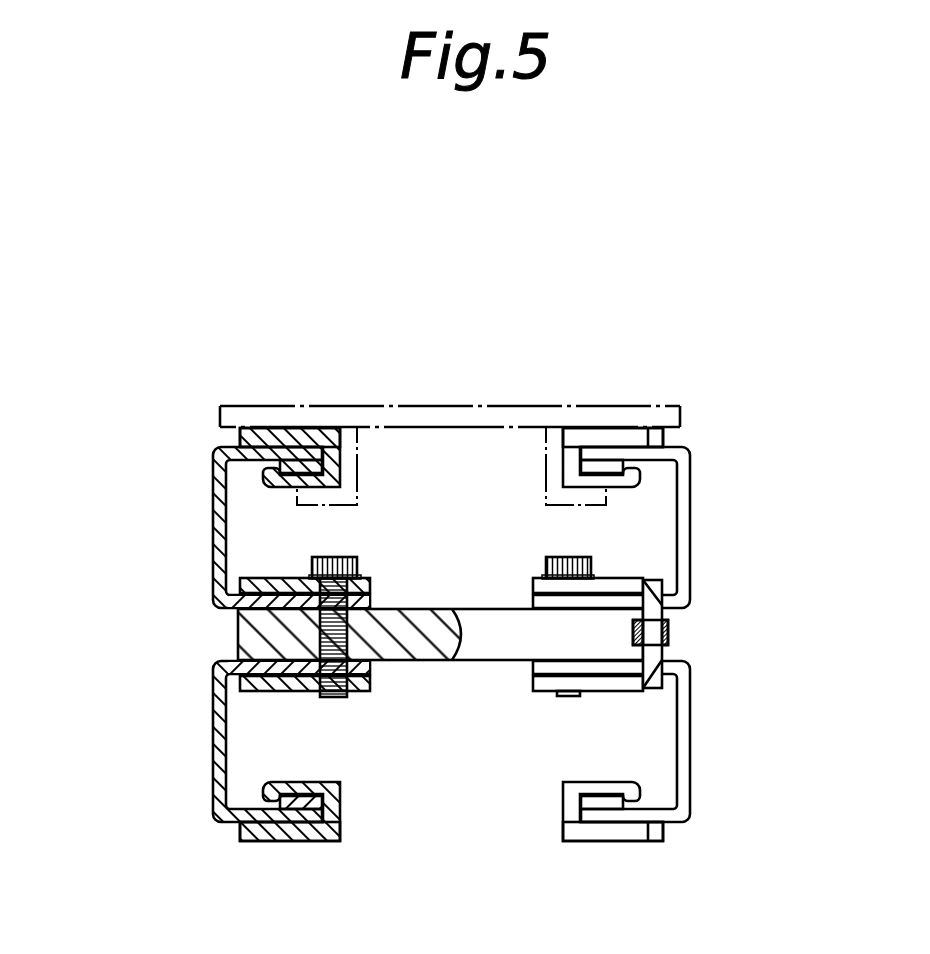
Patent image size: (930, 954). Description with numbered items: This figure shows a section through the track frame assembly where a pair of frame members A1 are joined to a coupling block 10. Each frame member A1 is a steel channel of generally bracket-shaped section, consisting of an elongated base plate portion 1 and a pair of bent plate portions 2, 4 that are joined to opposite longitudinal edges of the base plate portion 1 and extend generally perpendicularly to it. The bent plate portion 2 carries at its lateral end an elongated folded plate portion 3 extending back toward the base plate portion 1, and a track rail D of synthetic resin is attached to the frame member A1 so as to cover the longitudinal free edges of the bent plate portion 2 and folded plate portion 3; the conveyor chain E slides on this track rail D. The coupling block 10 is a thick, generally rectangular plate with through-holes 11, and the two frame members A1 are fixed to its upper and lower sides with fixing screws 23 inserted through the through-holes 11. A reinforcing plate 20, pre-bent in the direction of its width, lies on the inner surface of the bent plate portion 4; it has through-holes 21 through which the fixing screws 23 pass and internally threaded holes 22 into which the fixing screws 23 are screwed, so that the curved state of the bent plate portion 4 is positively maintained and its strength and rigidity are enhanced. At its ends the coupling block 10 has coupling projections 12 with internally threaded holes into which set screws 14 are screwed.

The base plate portion 1 is at (680, 538).
The frame member A1 is at (214, 522).
The bent plate portion 2 is at (642, 452).
The folded plate portion 3 is at (605, 462).
The bent plate portion 4 is at (525, 580).
The coupling block 10 is at (465, 662).
The through-holes 11 is at (240, 636).
The coupling projections 12 is at (650, 658).
The set screws 14 is at (666, 624).
The reinforcing plate 20 is at (303, 583).
The through-holes 21 is at (312, 560).
The internally threaded holes 22 is at (340, 698).
The fixing screws 23 is at (343, 557).
The track rail D is at (272, 428).
The conveyor chain E is at (222, 406).